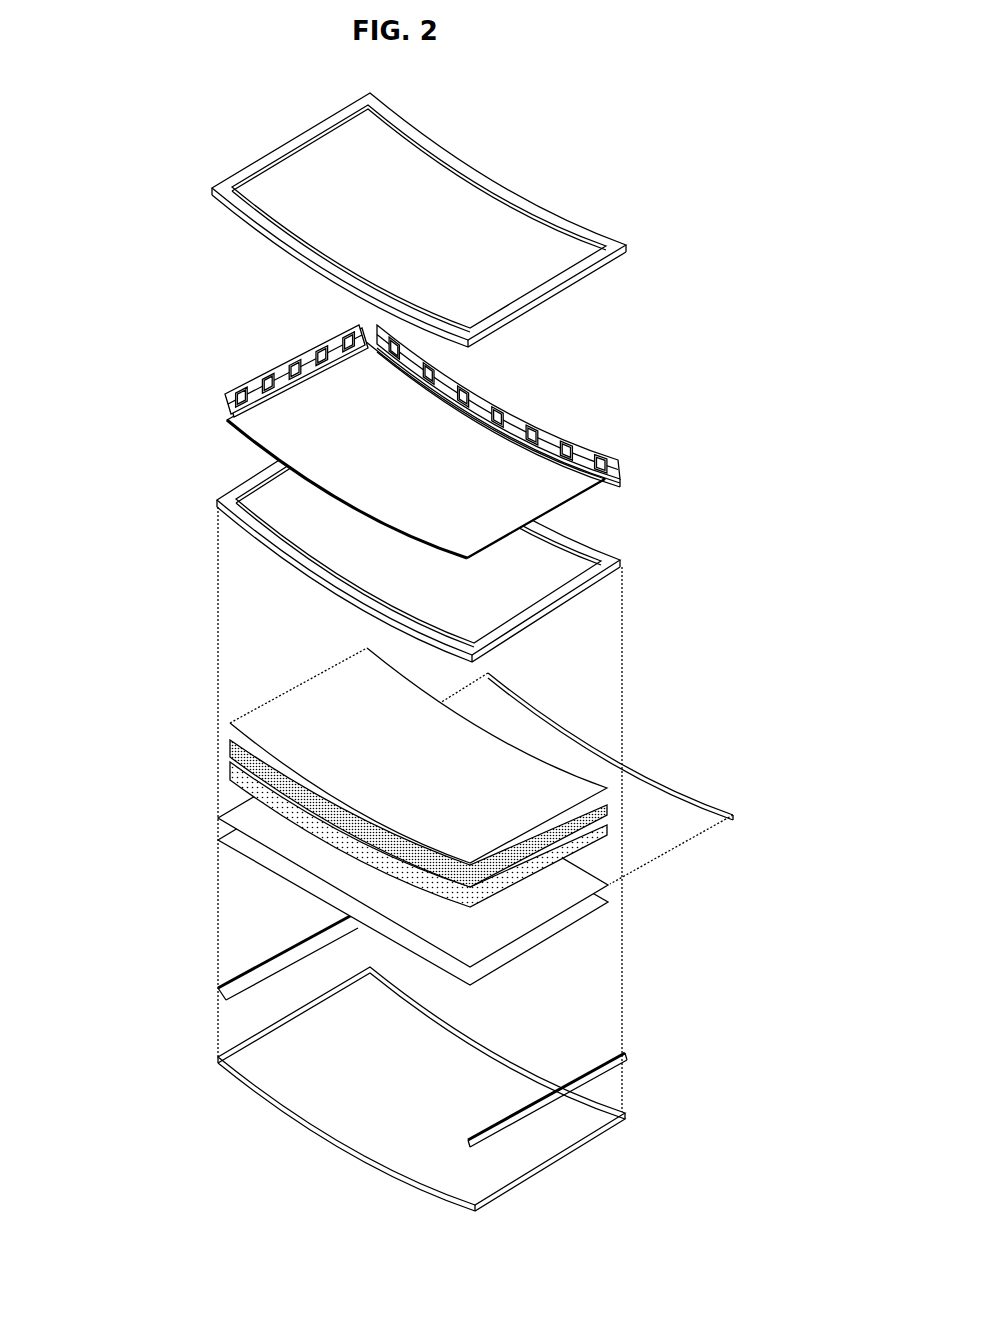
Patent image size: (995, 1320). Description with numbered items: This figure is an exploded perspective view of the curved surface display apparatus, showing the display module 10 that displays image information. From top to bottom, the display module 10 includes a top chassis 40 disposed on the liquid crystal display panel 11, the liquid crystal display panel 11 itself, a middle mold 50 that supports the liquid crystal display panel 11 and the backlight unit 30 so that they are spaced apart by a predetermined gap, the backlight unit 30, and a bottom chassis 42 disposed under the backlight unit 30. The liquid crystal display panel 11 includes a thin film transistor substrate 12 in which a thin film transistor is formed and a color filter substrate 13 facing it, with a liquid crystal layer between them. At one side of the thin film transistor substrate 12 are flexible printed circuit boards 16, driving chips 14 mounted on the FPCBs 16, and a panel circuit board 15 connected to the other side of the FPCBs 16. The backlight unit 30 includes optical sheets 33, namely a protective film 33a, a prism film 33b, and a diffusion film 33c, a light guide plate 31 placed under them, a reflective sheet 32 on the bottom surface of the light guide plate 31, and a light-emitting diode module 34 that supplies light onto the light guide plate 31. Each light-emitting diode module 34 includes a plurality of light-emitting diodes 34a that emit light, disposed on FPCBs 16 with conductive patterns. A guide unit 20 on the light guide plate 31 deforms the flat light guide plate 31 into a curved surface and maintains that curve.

The display module 10 is at (162, 596).
The liquid crystal display panel 11 is at (418, 441).
The thin film transistor substrate 12 is at (421, 449).
The color filter substrate 13 is at (538, 458).
The driving chips 14 is at (254, 371).
The panel circuit board 15 is at (227, 388).
The flexible printed circuit boards 16 is at (240, 427).
The guide unit 20 is at (673, 790).
The backlight unit 30 is at (120, 790).
The light guide plate 31 is at (220, 822).
The reflective sheet 32 is at (220, 850).
The optical sheets 33 is at (140, 692).
The protective film 33a is at (228, 720).
The prism film 33b is at (228, 742).
The diffusion film 33c is at (228, 763).
The light-emitting diode module 34 is at (247, 957).
The light-emitting diodes 34a is at (255, 970).
The top chassis 40 is at (628, 245).
The bottom chassis 42 is at (628, 1113).
The middle mold 50 is at (628, 555).